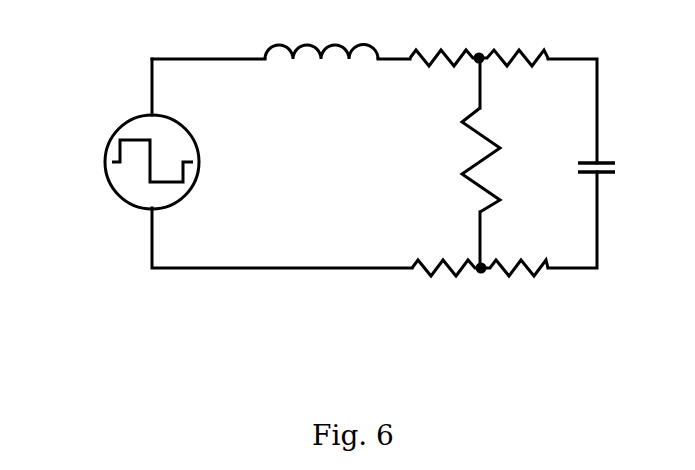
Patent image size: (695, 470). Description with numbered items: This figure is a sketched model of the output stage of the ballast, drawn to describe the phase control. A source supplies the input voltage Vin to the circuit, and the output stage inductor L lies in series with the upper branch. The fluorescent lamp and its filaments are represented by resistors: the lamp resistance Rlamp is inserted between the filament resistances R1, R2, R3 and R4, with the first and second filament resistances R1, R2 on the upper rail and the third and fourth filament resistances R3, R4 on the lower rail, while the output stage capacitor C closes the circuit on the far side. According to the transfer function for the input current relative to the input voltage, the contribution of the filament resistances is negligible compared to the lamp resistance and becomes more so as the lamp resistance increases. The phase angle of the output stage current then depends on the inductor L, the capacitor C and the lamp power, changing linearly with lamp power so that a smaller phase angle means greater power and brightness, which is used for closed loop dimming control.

The input voltage Vin is at (118, 162).
The output stage inductor L is at (321, 75).
The filament resistance R1 is at (445, 43).
The filament resistance R2 is at (514, 43).
The lamp resistance Rlamp is at (423, 160).
The output stage capacitor C is at (613, 167).
The filament resistance R3 is at (446, 281).
The filament resistance R4 is at (514, 281).